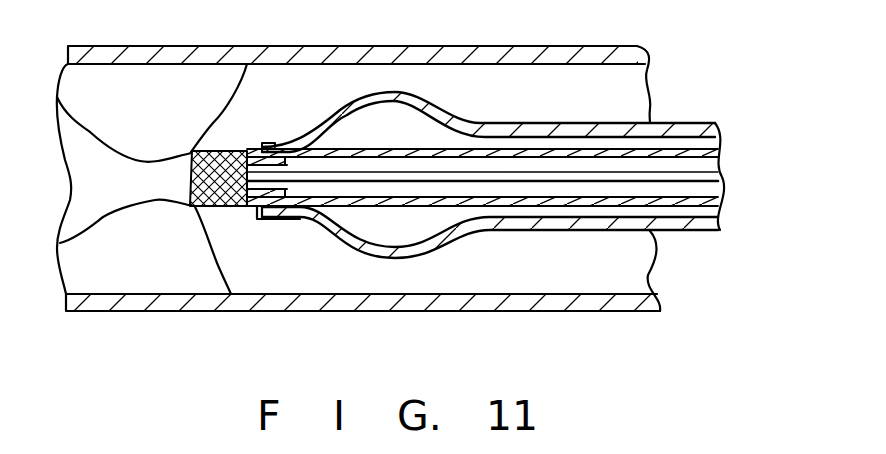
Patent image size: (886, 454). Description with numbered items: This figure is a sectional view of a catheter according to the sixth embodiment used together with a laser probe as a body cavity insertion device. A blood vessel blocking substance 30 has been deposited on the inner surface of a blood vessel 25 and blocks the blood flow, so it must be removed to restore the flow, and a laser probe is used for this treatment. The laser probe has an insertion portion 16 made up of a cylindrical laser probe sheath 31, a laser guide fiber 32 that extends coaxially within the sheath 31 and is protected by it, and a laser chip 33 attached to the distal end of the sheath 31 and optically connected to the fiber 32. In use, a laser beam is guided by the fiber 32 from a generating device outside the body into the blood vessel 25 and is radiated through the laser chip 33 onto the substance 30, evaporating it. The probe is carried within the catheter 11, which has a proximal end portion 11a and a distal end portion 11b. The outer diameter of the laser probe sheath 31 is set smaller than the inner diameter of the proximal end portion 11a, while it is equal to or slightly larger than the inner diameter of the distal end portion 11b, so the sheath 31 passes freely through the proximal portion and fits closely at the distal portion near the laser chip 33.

The blood vessel blocking substance 30 is at (188, 84).
The blood vessel 25 is at (100, 194).
The laser chip 33 is at (216, 151).
The catheter 11 is at (578, 124).
The laser guide fiber 32 is at (655, 172).
The laser probe sheath 31 is at (683, 206).
The proximal end portion 11a is at (573, 231).
The distal end portion 11b is at (278, 219).
The insertion portion 16 is at (437, 209).